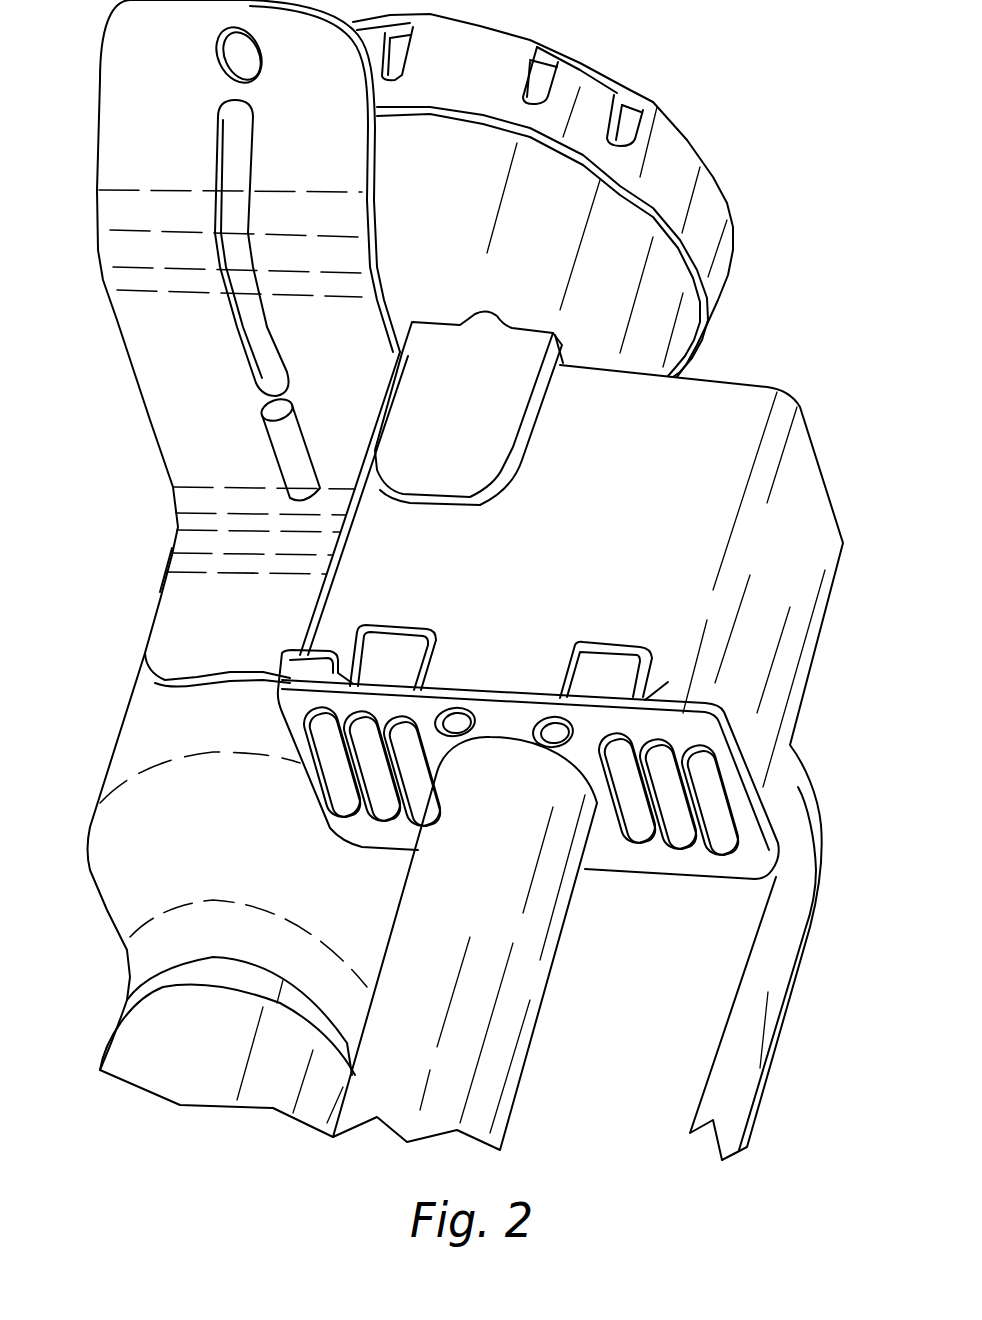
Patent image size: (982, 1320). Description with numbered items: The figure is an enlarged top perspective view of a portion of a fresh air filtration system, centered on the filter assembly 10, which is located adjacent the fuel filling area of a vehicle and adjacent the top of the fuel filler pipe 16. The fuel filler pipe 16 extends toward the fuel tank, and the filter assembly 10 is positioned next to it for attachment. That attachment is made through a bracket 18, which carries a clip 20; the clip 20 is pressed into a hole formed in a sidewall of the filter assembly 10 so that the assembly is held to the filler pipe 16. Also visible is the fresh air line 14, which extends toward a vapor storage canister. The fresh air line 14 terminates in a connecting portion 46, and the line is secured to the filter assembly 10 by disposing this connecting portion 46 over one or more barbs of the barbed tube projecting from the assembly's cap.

The filter assembly 10 is at (777, 683).
The fresh air line 14 is at (523, 977).
The fuel filler pipe 16 is at (167, 950).
The bracket 18 is at (192, 387).
The clip 20 is at (485, 433).
The connecting portion 46 is at (527, 790).